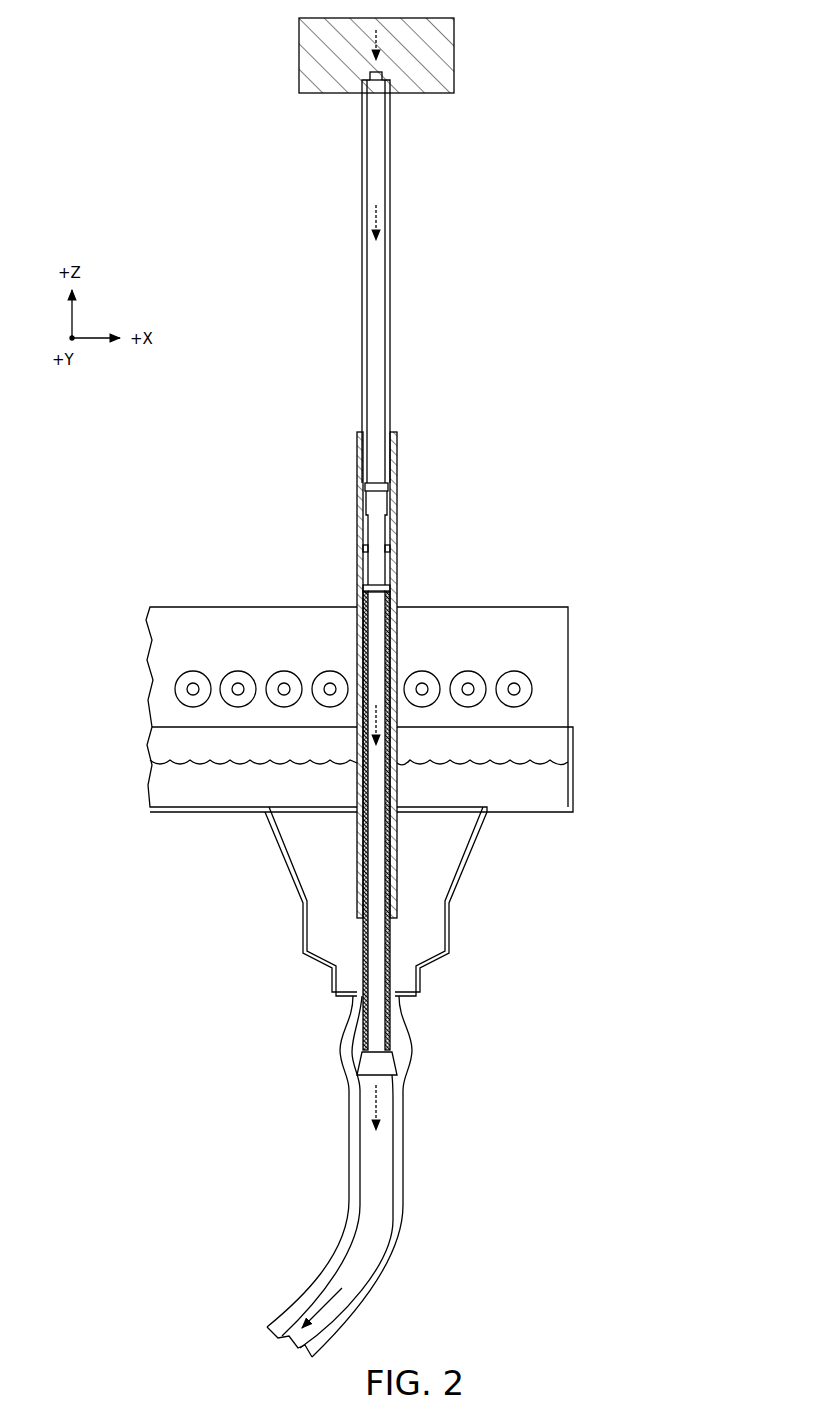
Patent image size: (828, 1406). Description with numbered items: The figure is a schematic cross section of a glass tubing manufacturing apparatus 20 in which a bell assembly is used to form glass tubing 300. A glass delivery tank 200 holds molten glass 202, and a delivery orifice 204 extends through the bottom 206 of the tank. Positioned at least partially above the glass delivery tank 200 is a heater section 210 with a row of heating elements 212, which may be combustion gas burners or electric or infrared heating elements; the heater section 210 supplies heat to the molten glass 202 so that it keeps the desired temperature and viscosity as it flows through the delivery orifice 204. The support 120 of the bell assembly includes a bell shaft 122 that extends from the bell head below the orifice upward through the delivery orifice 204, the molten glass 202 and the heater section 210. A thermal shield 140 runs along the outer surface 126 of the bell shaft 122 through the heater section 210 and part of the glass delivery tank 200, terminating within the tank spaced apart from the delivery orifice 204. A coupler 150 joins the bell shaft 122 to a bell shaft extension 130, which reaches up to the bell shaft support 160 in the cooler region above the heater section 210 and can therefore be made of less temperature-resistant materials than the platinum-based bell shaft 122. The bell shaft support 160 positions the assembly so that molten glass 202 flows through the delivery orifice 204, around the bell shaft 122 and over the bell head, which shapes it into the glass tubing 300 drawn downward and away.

The glass tubing manufacturing apparatus 20 is at (663, 492).
The support 120 is at (338, 530).
The bell shaft 122 is at (362, 958).
The outer surface 126 is at (360, 974).
The bell shaft extension 130 is at (392, 318).
The thermal shield 140 is at (392, 840).
The coupler 150 is at (390, 566).
The bell shaft support 160 is at (455, 58).
The glass delivery tank 200 is at (578, 752).
The molten glass 202 is at (205, 797).
The delivery orifice 204 is at (420, 929).
The bottom 206 is at (346, 993).
The heater section 210 is at (574, 663).
The heating elements 212 is at (238, 671).
The glass tubing 300 is at (403, 1222).